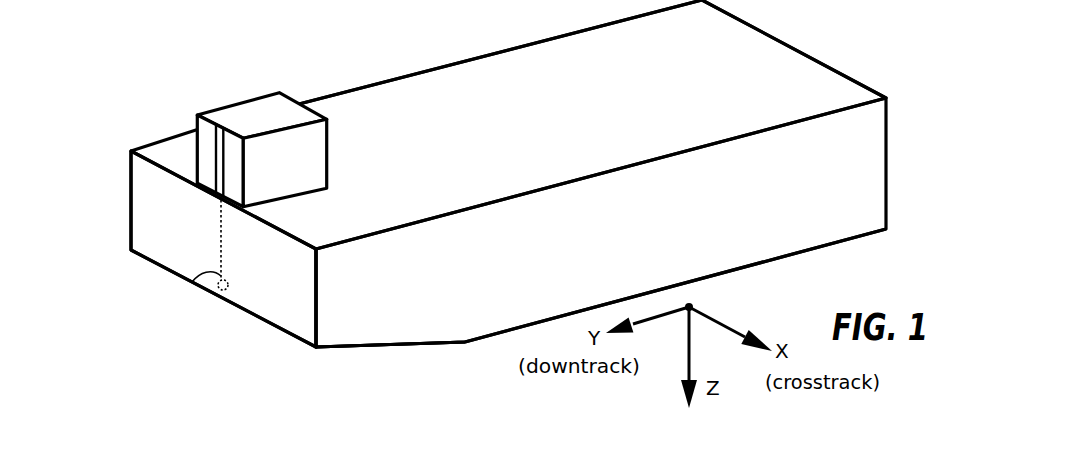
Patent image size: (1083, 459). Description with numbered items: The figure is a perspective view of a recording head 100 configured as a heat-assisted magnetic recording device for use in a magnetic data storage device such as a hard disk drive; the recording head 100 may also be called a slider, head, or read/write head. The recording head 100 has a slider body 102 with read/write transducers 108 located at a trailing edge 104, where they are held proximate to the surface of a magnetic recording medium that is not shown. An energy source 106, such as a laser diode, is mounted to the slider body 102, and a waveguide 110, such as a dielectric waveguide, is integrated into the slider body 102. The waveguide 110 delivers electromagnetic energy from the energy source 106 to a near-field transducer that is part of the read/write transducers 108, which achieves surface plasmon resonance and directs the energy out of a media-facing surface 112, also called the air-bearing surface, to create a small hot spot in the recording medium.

The recording head 100 is at (855, 40).
The slider body 102 is at (450, 77).
The trailing edge 104 is at (131, 227).
The energy source 106 is at (220, 108).
The read/write transducers 108 is at (218, 325).
The waveguide 110 is at (192, 283).
The media-facing surface 112 is at (303, 348).